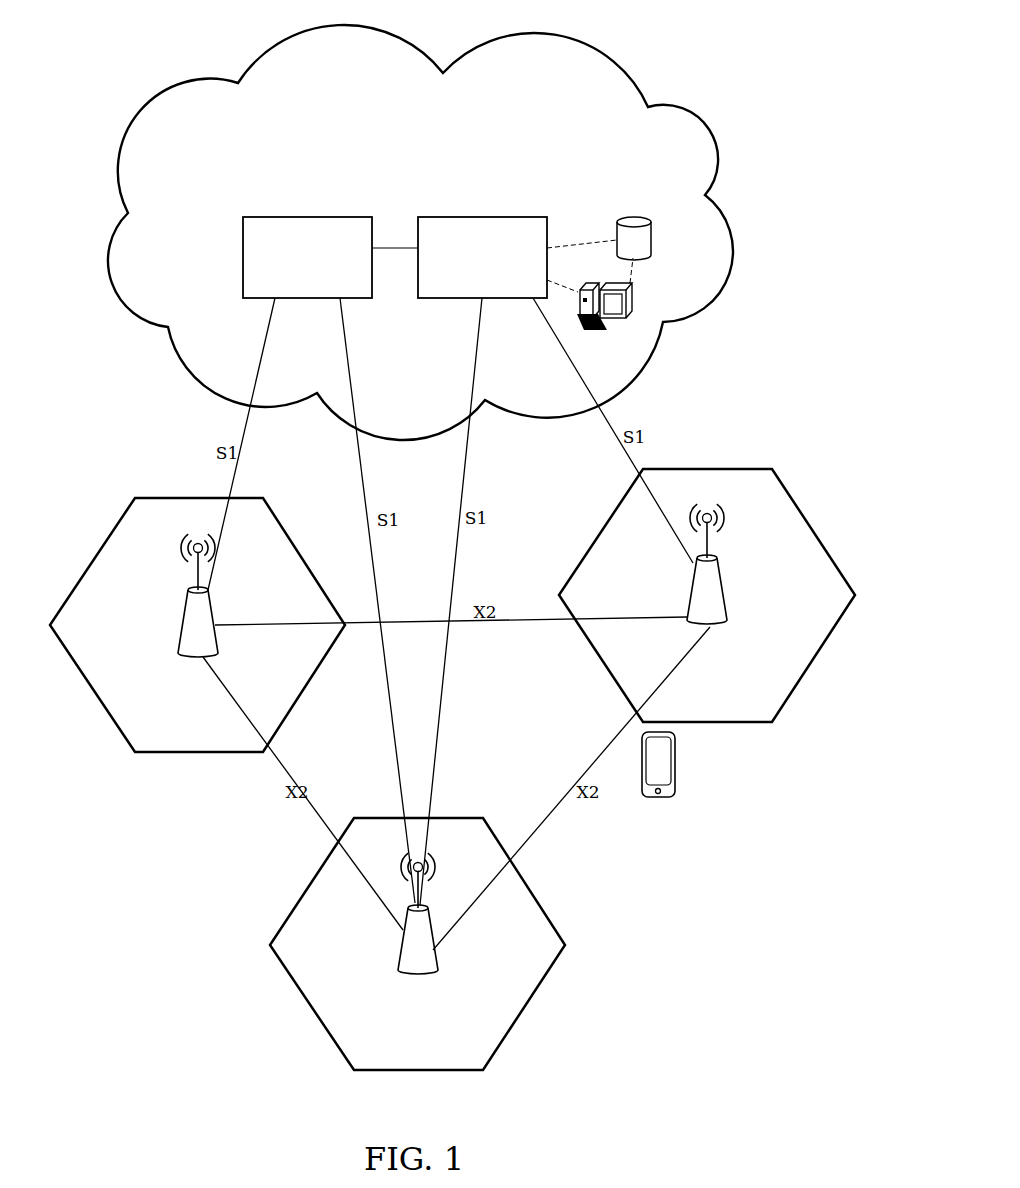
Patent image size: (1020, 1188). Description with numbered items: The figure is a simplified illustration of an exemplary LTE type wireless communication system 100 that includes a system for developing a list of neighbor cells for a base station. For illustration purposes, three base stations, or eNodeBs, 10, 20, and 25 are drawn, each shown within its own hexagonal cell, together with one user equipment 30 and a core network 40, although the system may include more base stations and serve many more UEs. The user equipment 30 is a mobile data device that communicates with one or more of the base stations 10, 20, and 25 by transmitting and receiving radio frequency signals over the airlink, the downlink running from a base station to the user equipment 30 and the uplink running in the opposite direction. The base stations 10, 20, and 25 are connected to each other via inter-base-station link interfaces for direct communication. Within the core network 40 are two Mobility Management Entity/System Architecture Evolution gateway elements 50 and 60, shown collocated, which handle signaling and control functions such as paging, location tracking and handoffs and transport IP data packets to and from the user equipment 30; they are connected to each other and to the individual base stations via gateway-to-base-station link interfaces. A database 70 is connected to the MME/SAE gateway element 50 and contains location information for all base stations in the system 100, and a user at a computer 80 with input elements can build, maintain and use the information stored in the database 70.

The wireless communication system 100 is at (766, 81).
The core network 40 is at (602, 50).
The MME/SAE gateway element 60 is at (307, 216).
The MME/SAE gateway element 50 is at (452, 216).
The database 70 is at (652, 238).
The computer 80 is at (613, 322).
The base station 10 is at (178, 640).
The base station 20 is at (728, 618).
The base station 25 is at (425, 975).
The user equipment 30 is at (676, 752).